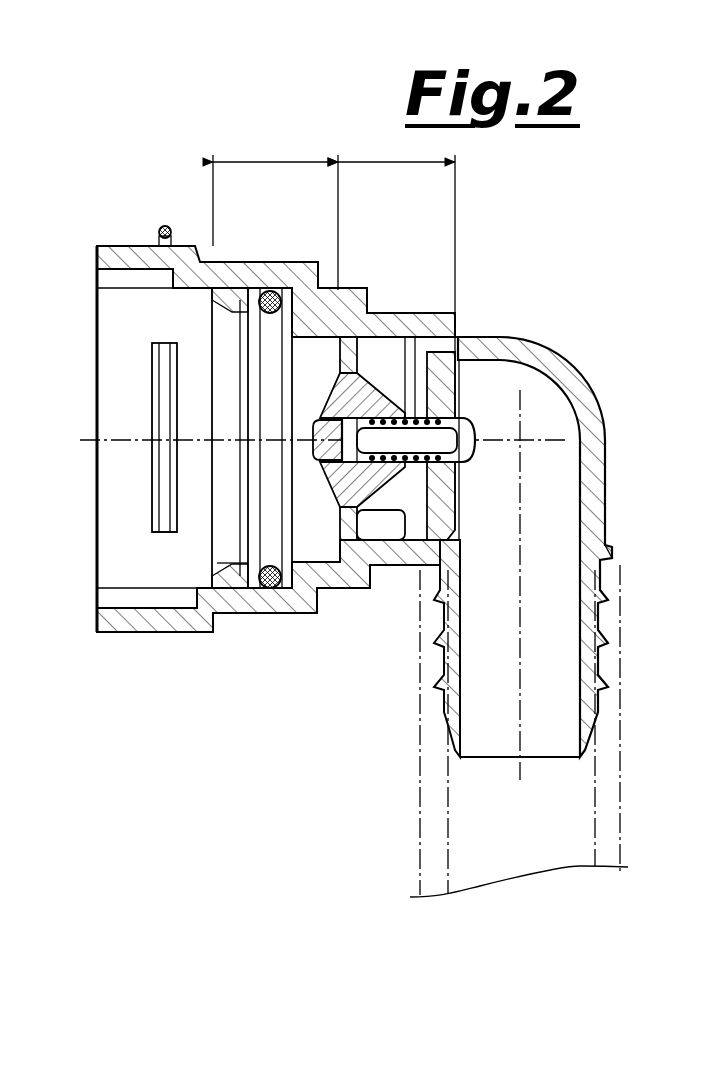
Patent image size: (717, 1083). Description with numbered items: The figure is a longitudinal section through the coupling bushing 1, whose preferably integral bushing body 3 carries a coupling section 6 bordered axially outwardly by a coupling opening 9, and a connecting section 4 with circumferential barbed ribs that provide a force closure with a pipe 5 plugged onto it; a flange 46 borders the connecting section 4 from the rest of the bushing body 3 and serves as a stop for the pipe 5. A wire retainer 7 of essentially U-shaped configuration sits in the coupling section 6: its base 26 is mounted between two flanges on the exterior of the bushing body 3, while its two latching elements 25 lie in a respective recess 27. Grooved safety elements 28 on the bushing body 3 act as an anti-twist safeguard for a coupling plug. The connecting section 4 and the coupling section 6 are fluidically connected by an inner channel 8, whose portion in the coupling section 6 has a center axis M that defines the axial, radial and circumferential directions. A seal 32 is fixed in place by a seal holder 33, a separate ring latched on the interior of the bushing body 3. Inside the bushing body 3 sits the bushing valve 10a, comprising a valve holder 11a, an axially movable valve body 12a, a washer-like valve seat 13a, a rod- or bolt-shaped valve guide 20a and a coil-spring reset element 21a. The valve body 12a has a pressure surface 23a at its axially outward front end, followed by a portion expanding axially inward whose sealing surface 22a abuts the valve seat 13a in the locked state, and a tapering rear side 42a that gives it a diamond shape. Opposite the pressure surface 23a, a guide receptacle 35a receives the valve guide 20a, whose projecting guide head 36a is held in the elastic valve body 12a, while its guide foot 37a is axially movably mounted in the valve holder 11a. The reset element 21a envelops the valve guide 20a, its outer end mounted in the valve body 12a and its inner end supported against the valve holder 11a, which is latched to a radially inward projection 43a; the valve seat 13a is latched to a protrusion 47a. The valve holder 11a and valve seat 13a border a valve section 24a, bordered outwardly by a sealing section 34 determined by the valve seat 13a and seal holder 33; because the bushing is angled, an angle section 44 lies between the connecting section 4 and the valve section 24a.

The coupling bushing 1 is at (240, 775).
The bushing body 3 is at (470, 278).
The connecting section 4 is at (615, 667).
The pipe 5 is at (613, 820).
The coupling section 6 is at (185, 218).
The retainer 7 is at (150, 222).
The inner channel 8 is at (538, 424).
The coupling opening 9 is at (103, 335).
The bushing valve 10a is at (372, 345).
The valve holder 11a is at (462, 400).
The valve body 12a is at (340, 385).
The valve seat 13a is at (322, 600).
The valve guide 20a is at (445, 432).
The reset element 21a is at (418, 400).
The sealing surface 22a is at (325, 480).
The pressure surface 23a is at (318, 438).
The valve section 24a is at (380, 160).
The latching elements 25 is at (152, 530).
The base 26 is at (165, 228).
The recess 27 is at (150, 512).
The safety element 28 is at (120, 275).
The seal 32 is at (250, 612).
The seal holder 33 is at (232, 290).
The sealing section 34 is at (275, 160).
The guide receptacle 35a is at (470, 525).
The guide head 36a is at (343, 447).
The guide foot 37a is at (470, 445).
The rear side 42a is at (388, 600).
The projection 43a is at (458, 410).
The angle section 44 is at (612, 365).
The flange 46 is at (610, 558).
The protrusion 47a is at (368, 600).
The center axis M is at (560, 440).